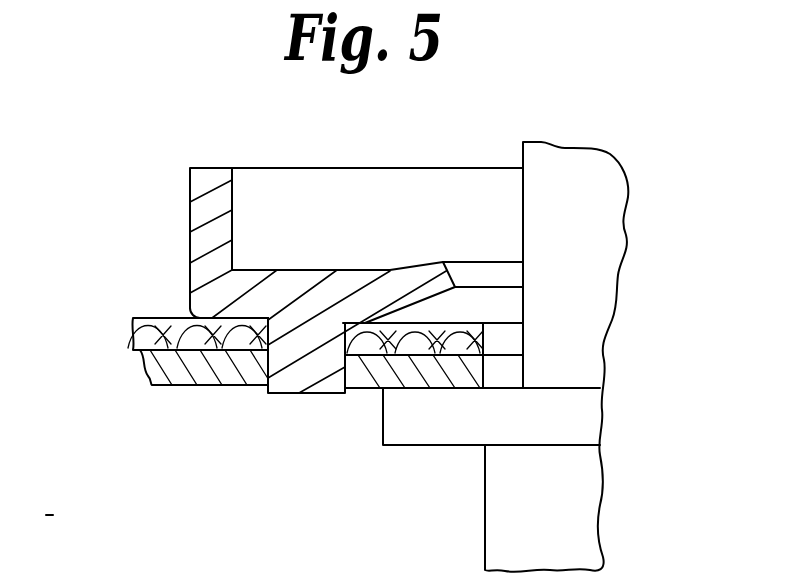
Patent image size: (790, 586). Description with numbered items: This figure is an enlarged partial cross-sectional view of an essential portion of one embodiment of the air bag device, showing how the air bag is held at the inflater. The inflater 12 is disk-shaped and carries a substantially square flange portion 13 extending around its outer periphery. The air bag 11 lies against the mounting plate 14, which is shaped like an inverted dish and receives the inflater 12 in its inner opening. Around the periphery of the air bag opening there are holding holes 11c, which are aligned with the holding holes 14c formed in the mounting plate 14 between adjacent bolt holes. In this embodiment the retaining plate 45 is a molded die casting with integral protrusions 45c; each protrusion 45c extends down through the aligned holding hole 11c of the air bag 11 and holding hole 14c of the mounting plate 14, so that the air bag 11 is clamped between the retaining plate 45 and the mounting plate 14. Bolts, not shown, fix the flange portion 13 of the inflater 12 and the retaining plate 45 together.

The air bag 11 is at (132, 335).
The holding hole 11c is at (280, 322).
The inflater 12 is at (595, 288).
The flange portion 13 is at (587, 412).
The mounting plate 14 is at (148, 376).
The holding hole 14c is at (343, 372).
The retaining plate 45 is at (199, 221).
The protrusion 45c is at (287, 383).